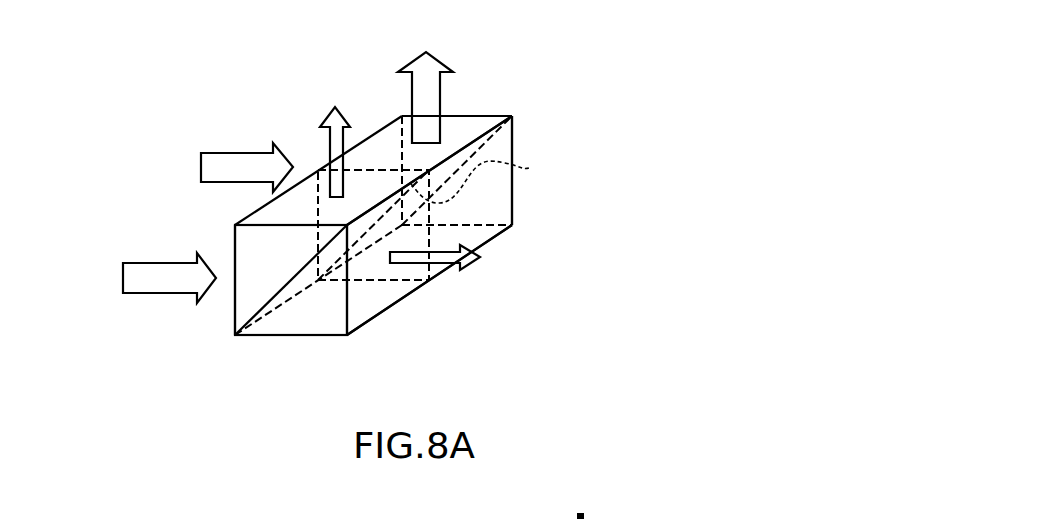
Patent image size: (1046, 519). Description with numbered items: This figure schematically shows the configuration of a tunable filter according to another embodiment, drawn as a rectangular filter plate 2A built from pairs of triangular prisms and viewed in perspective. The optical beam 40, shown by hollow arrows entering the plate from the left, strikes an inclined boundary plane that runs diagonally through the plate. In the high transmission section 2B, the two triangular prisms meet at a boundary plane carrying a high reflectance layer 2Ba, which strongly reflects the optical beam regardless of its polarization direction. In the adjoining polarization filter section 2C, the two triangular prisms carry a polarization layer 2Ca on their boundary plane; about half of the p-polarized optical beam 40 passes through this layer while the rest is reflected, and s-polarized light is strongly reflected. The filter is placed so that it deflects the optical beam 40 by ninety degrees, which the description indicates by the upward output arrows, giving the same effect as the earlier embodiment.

The filter plate 2A is at (538, 61).
The high transmission section 2B is at (489, 238).
The high reflectance layer 2Ba is at (494, 180).
The neutral density filter section 2C is at (393, 305).
The polarization layer 2Ca is at (284, 300).
The optical beam 40 is at (212, 153).